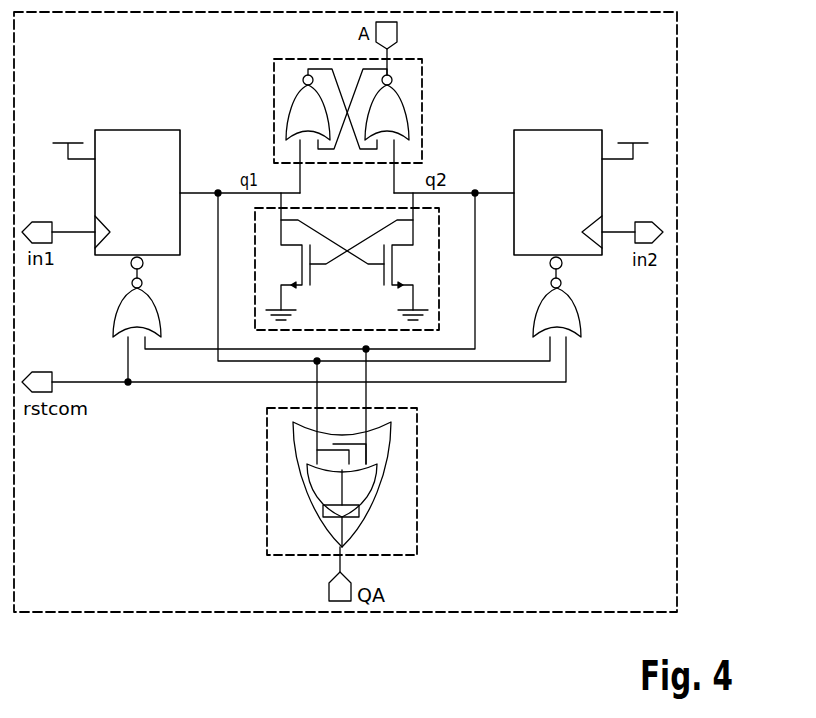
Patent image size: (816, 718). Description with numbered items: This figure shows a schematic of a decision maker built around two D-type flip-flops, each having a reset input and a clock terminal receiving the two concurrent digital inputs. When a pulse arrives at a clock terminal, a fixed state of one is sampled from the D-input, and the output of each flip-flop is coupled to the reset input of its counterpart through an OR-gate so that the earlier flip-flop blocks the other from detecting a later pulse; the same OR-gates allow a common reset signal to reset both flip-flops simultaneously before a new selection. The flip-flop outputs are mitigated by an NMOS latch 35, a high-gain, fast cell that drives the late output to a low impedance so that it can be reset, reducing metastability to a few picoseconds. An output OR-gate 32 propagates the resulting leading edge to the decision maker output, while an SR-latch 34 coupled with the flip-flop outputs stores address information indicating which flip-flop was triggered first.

The output OR-gate 32 is at (417, 475).
The SR-latch 34 is at (422, 78).
The NMOS latch 35 is at (439, 292).